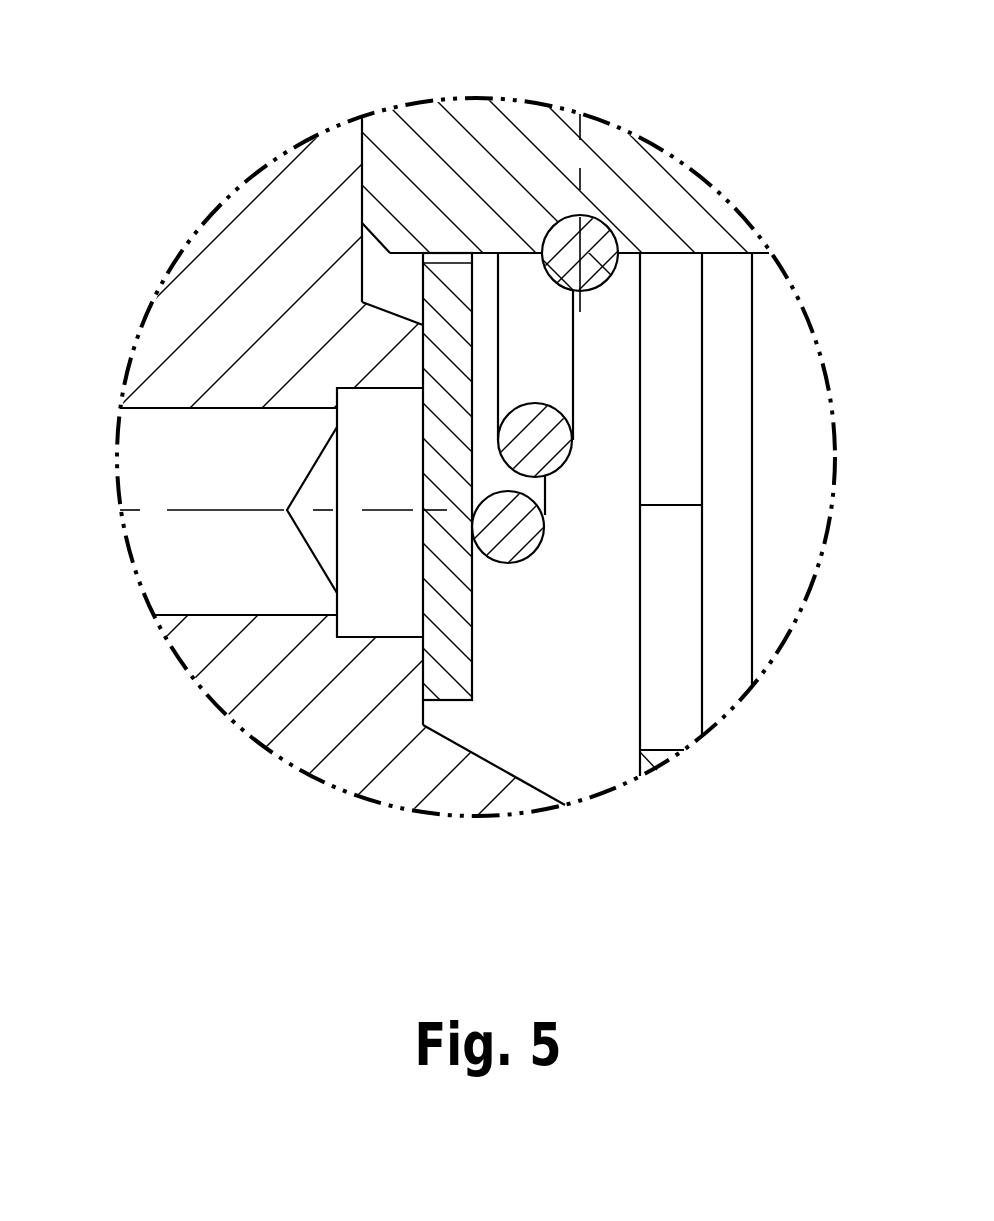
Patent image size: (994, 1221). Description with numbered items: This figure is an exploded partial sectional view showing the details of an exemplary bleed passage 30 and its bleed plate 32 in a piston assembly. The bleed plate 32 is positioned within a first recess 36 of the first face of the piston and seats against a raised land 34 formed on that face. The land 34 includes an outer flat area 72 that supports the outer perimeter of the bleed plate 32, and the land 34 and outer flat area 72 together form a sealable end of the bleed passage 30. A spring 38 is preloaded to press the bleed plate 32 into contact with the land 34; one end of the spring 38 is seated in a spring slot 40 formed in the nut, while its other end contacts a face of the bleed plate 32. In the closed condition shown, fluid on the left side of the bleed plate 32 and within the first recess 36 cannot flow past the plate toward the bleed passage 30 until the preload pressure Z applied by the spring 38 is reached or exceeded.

The bleed passage 30 is at (216, 472).
The bleed plate 32 is at (472, 637).
The raised land 34 is at (395, 362).
The first recess 36 is at (568, 641).
The spring 38 is at (557, 437).
The spring slot 40 is at (608, 225).
The outer flat area 72 is at (457, 630).
The preload pressure Z is at (484, 592).